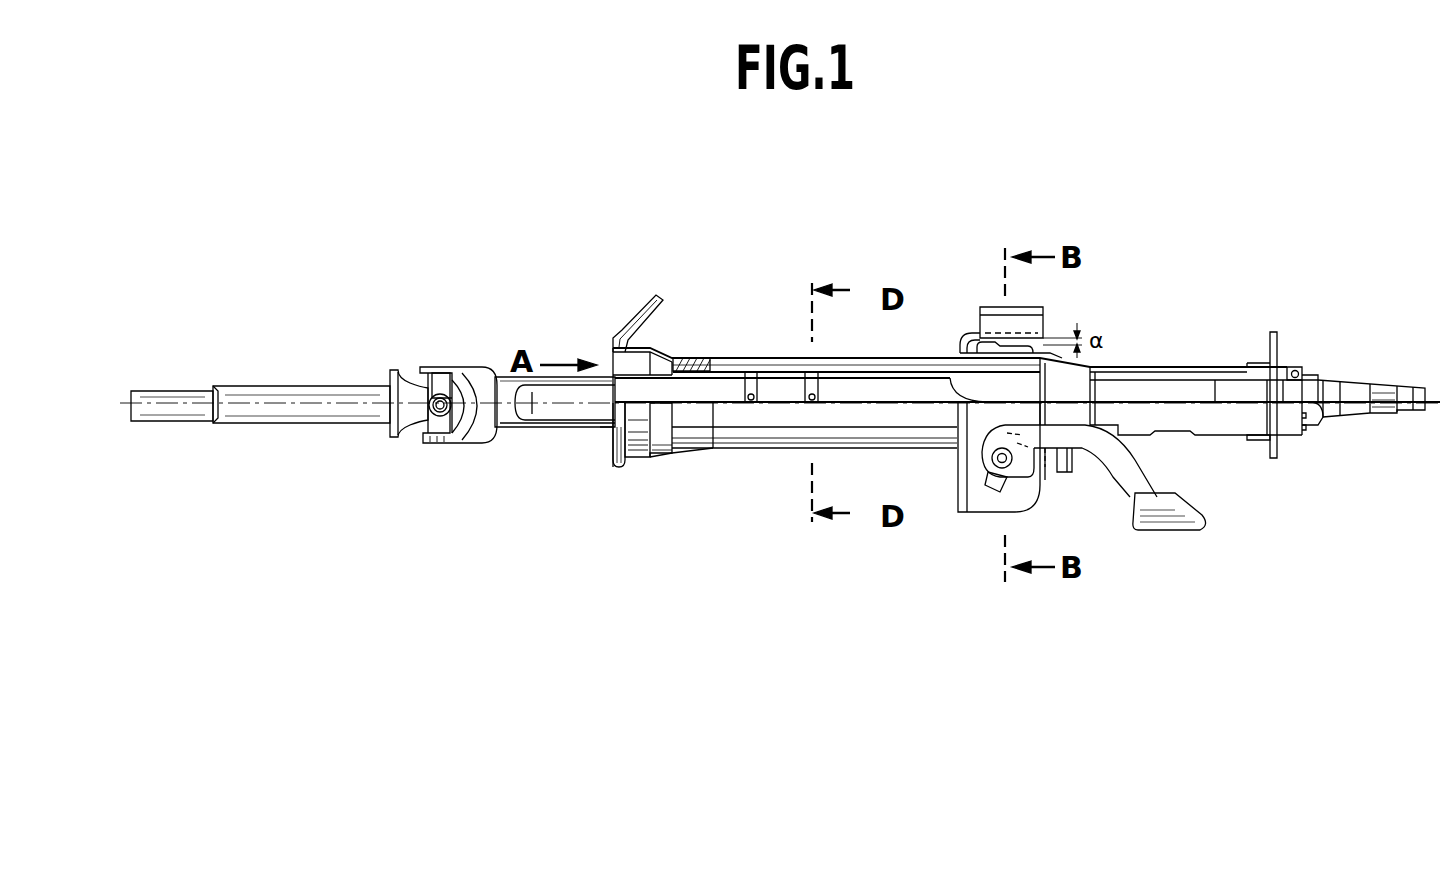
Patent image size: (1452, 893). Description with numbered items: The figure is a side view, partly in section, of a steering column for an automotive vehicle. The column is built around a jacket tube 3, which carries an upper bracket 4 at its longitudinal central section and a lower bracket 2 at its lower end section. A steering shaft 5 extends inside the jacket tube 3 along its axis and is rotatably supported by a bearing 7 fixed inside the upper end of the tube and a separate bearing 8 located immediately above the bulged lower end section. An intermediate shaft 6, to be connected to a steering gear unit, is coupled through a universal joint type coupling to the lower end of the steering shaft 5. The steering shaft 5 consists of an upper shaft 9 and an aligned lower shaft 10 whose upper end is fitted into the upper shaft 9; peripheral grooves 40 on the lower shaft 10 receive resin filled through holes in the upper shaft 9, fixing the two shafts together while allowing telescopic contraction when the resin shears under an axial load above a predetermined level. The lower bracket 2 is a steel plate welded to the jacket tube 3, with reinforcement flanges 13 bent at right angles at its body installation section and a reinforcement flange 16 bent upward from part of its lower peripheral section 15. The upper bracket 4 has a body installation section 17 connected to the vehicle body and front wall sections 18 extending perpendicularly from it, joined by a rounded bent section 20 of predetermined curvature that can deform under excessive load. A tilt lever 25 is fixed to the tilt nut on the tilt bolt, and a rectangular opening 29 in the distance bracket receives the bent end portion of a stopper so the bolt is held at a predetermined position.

The lower bracket 2 is at (662, 296).
The jacket tube 3 is at (737, 356).
The upper bracket 4 is at (1035, 307).
The steering shaft 5 is at (1190, 376).
The intermediate shaft 6 is at (300, 386).
The bearing 7 is at (1297, 366).
The bearing 8 is at (698, 357).
The upper shaft 9 is at (1202, 396).
The lower shaft 10 is at (530, 428).
The reinforcement flange 13 is at (630, 318).
The lower peripheral section 15 is at (617, 468).
The reinforcement flange 16 is at (626, 462).
The body installation section 17 is at (990, 306).
The front wall section 18 is at (958, 425).
The bent section 20 is at (971, 333).
The tilt lever 25 is at (1123, 492).
The rectangular opening 29 is at (1067, 474).
The peripheral groove 40 is at (755, 366).